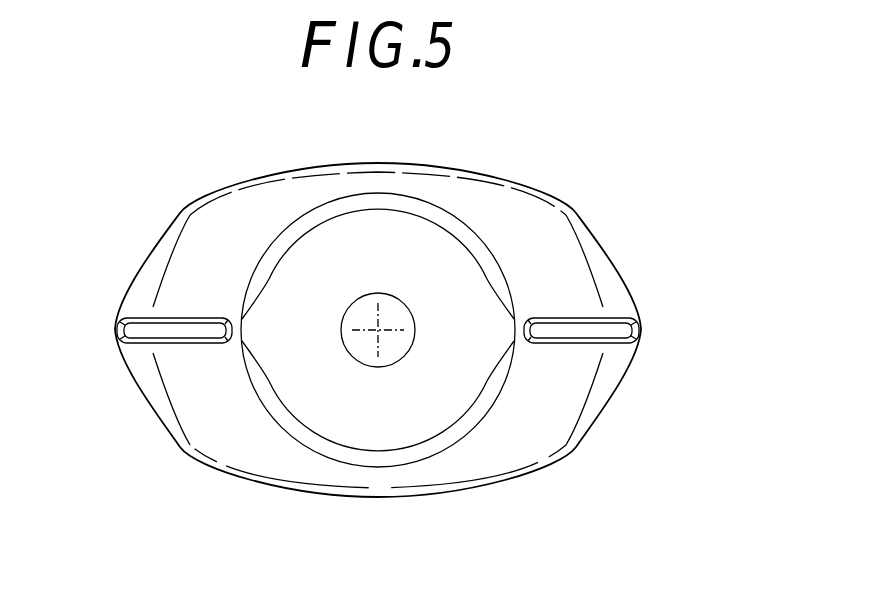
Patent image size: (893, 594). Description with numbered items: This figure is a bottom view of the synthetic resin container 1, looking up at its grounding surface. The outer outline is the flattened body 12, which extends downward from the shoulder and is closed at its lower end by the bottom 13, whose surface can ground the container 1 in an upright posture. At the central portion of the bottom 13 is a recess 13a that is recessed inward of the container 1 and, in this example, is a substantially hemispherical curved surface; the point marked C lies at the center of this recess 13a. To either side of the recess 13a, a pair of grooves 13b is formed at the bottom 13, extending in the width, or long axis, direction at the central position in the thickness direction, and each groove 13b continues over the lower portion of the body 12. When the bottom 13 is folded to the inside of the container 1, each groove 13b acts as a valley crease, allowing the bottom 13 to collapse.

The synthetic resin container 1 is at (609, 190).
The body 12 is at (151, 248).
The bottom 13 is at (538, 445).
The recess 13a is at (327, 400).
The grooves 13b is at (587, 332).
The center C is at (378, 330).